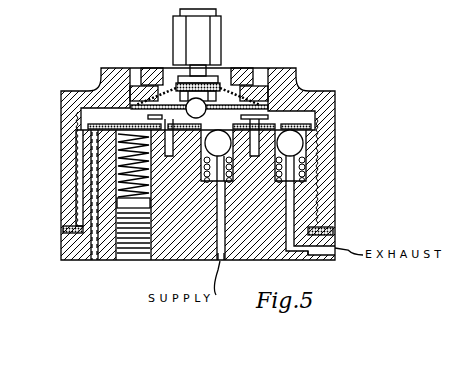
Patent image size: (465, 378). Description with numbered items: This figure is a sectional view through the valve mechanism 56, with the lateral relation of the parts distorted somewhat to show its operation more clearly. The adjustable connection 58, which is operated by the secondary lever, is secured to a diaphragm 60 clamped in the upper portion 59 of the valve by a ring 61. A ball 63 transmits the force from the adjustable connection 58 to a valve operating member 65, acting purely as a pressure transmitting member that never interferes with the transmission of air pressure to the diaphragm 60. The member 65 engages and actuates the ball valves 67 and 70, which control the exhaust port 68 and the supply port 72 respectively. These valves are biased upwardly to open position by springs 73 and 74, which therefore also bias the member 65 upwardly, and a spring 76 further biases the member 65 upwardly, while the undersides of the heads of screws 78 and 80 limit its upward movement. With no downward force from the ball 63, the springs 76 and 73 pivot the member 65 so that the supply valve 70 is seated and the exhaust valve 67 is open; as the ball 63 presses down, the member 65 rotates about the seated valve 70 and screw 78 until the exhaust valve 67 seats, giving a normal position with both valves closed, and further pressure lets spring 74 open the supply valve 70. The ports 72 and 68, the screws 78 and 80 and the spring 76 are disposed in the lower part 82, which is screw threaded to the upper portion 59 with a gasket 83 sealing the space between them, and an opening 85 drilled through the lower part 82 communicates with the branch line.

The valve mechanism 56 is at (333, 127).
The adjustable connection 58 is at (208, 19).
The upper portion 59 is at (275, 62).
The diaphragm 60 is at (165, 62).
The ring 61 is at (229, 61).
The ball 63 is at (199, 108).
The valve operating member 65 is at (276, 117).
The exhaust ball valve 67 is at (290, 143).
The exhaust port 68 is at (303, 242).
The supply ball valve 70 is at (218, 155).
The supply port 72 is at (222, 243).
The spring 73 is at (300, 158).
The spring 74 is at (227, 163).
The spring 76 is at (142, 168).
The screw 78 is at (140, 108).
The screw 80 is at (233, 109).
The lower part 82 is at (185, 252).
The gasket 83 is at (327, 223).
The opening 85 is at (88, 253).